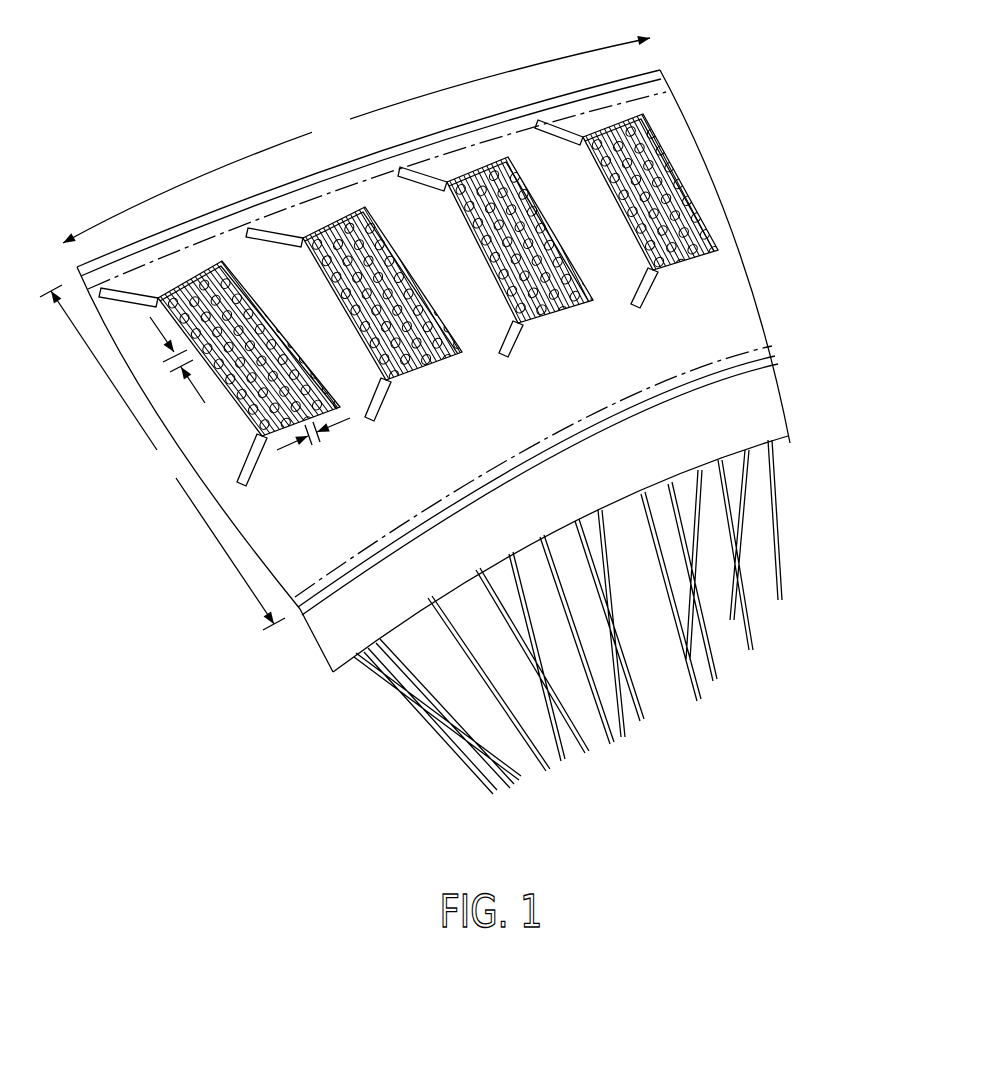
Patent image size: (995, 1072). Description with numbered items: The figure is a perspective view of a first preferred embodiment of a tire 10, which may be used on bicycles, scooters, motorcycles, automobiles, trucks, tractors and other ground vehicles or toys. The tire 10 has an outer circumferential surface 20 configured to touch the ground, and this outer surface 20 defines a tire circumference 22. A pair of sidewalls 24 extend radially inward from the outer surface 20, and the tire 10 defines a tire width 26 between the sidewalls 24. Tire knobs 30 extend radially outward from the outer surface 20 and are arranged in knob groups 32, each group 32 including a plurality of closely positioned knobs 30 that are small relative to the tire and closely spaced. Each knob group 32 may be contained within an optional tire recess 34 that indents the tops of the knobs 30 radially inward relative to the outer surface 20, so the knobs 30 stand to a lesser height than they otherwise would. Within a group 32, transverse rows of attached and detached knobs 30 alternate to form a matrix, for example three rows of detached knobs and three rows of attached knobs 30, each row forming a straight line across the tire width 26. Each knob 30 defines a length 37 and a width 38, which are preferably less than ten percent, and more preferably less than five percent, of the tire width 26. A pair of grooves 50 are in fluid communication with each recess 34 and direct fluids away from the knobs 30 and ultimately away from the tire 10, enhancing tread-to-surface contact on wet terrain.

The tire 10 is at (190, 41).
The outer circumferential surface 20 is at (453, 432).
The tire circumference 22 is at (356, 140).
The sidewalls 24 is at (327, 630).
The tire width 26 is at (162, 457).
The tire knobs 30 is at (437, 292).
The knob groups 32 is at (422, 263).
The tire recess 34 is at (655, 130).
The knob length 37 is at (313, 444).
The knob width 38 is at (172, 360).
The grooves 50 is at (637, 280).